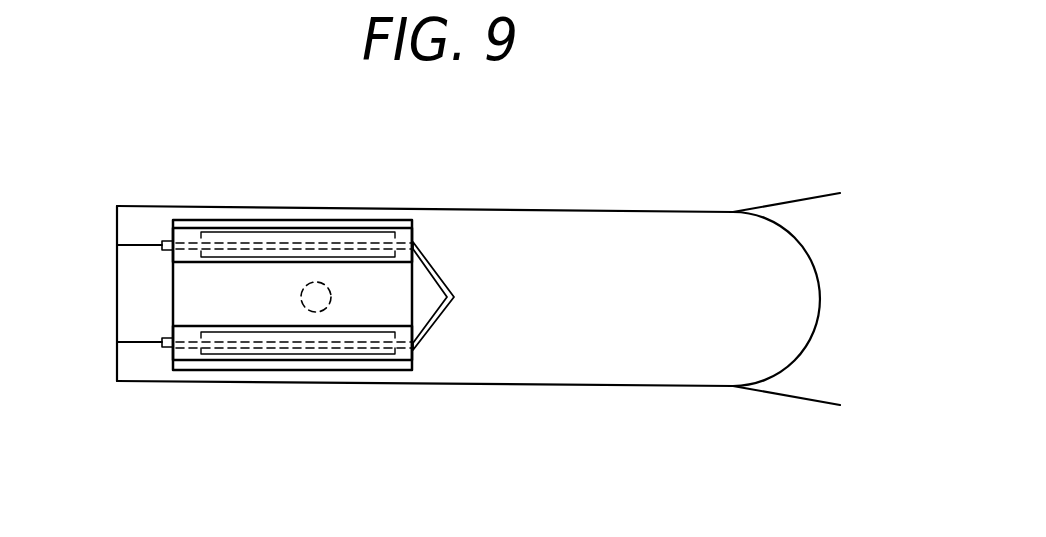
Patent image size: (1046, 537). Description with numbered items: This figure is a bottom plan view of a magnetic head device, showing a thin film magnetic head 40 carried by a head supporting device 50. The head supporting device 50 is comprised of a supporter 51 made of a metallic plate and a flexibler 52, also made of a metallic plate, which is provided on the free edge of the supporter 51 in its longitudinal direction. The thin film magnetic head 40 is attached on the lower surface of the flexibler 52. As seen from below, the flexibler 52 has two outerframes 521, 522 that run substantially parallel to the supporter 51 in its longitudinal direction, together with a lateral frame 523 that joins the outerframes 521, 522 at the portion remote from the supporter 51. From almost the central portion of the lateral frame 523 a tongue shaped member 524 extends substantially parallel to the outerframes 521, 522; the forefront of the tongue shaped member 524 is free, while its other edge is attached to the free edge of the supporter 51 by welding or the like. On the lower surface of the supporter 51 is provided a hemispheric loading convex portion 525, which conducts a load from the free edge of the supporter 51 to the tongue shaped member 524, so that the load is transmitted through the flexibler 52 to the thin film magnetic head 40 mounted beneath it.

The thin film magnetic head 40 is at (281, 336).
The head supporting device 50 is at (436, 324).
The supporter 51 is at (796, 222).
The flexibler 52 is at (392, 301).
The outerframe 521 is at (156, 218).
The outerframe 522 is at (316, 375).
The lateral frame 523 is at (137, 315).
The tongue shaped member 524 is at (423, 313).
The hemispheric loading convex portion 525 is at (316, 283).